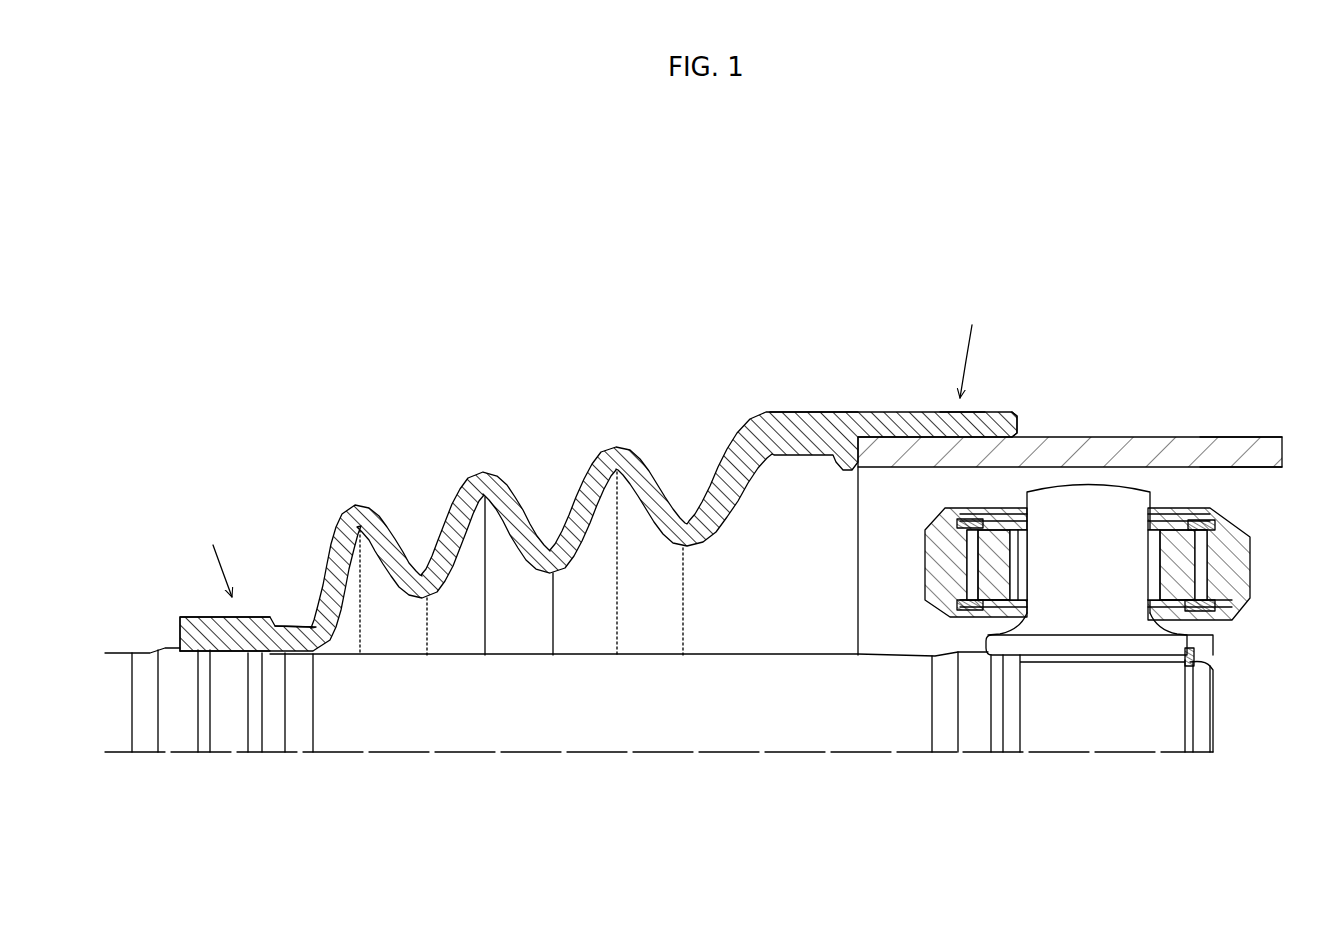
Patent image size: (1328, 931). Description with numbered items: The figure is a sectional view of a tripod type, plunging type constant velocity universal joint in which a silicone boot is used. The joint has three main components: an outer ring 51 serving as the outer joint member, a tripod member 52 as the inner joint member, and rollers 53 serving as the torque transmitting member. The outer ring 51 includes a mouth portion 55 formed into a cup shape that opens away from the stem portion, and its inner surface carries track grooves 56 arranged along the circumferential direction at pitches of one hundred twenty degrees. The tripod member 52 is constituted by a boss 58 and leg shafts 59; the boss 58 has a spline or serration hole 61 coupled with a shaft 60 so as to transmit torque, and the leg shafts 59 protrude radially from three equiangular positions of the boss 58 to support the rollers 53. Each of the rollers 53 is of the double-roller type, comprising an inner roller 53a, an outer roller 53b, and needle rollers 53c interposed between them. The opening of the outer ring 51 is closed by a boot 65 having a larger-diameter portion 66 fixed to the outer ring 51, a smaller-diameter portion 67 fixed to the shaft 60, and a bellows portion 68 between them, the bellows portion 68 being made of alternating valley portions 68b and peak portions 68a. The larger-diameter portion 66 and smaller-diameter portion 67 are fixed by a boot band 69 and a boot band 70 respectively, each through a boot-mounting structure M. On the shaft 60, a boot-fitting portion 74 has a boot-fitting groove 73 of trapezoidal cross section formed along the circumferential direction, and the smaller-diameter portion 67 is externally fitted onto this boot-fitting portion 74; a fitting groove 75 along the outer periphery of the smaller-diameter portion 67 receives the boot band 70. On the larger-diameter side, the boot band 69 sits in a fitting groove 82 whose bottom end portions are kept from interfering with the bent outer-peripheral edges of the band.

The outer ring 51 is at (1097, 437).
The tripod member 52 is at (1218, 636).
The rollers 53 is at (1234, 548).
The inner roller 53a is at (1180, 508).
The outer roller 53b is at (1230, 572).
The needle rollers 53c is at (950, 570).
The mouth portion 55 is at (1227, 440).
The track grooves 56 is at (1000, 490).
The boss 58 is at (986, 645).
The leg shafts 59 is at (1120, 508).
The shaft 60 is at (754, 652).
The serration hole 61 is at (1077, 664).
The boot 65 is at (636, 448).
The larger-diameter portion 66 is at (937, 413).
The smaller-diameter portion 67 is at (243, 627).
The bellows portion 68 is at (512, 467).
The peak portions 68a is at (356, 505).
The valley portions 68b is at (426, 574).
The boot band 69 is at (966, 415).
The boot band 70 is at (222, 617).
The boot-fitting groove 73 is at (235, 720).
The boot-fitting portion 74 is at (235, 690).
The fitting groove 75 is at (285, 620).
The fitting groove 82 is at (960, 412).
The boot-mounting structure M is at (593, 448).